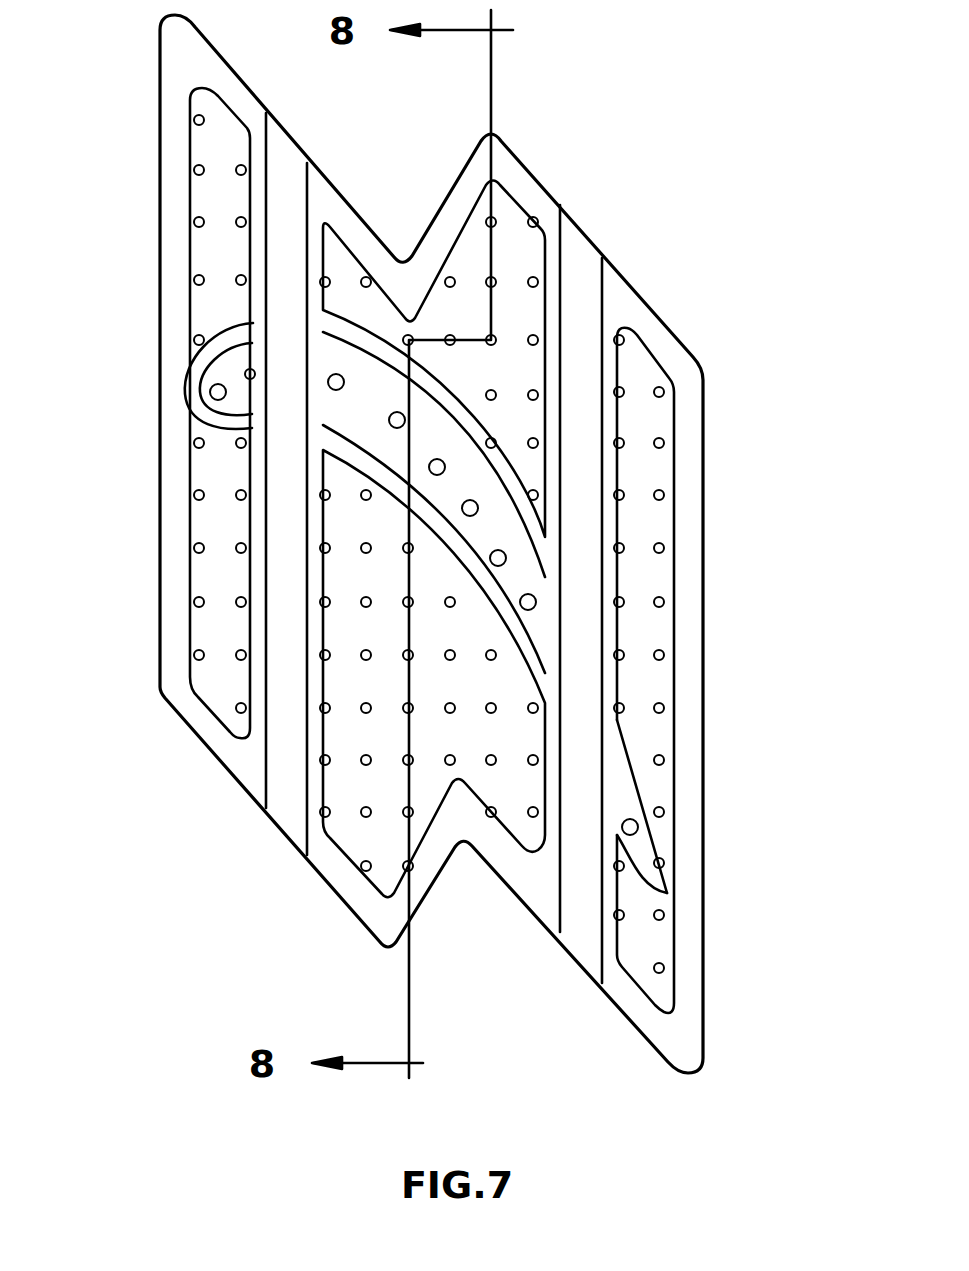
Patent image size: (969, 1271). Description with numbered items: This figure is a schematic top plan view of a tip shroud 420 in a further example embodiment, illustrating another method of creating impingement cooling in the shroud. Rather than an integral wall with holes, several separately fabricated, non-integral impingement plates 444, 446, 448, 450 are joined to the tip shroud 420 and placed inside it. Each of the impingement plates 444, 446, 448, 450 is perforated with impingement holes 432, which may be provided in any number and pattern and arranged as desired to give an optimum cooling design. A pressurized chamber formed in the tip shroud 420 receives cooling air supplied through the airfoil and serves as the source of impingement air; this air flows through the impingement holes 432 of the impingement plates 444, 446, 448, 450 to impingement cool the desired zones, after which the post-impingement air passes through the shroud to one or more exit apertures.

The tip shroud 420 is at (702, 251).
The impingement holes 432 is at (362, 816).
The impingement plate 444 is at (455, 740).
The impingement plate 446 is at (517, 248).
The impingement plate 448 is at (640, 473).
The impingement plate 450 is at (218, 525).